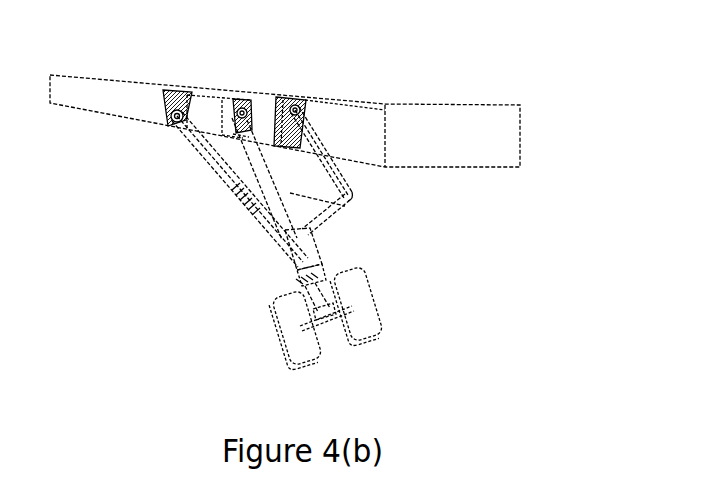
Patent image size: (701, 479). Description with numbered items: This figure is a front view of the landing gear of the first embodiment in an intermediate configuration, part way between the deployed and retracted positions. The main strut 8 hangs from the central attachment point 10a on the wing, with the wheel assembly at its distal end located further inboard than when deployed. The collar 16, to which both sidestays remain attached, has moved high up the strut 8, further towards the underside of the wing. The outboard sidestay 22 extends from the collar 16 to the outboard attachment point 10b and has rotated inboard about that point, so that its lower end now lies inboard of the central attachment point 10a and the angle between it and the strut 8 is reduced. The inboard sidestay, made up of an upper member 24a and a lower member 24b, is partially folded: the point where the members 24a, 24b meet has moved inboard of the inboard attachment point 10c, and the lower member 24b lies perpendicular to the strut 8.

The central attachment point 10a is at (243, 105).
The outboard attachment point 10b is at (180, 107).
The inboard attachment point 10c is at (302, 105).
The strut 8 is at (273, 192).
The outboard sidestay 22 is at (218, 163).
The upper member of the inboard sidestay 24a is at (315, 140).
The lower member of the inboard sidestay 24b is at (313, 212).
The collar 16 is at (292, 228).